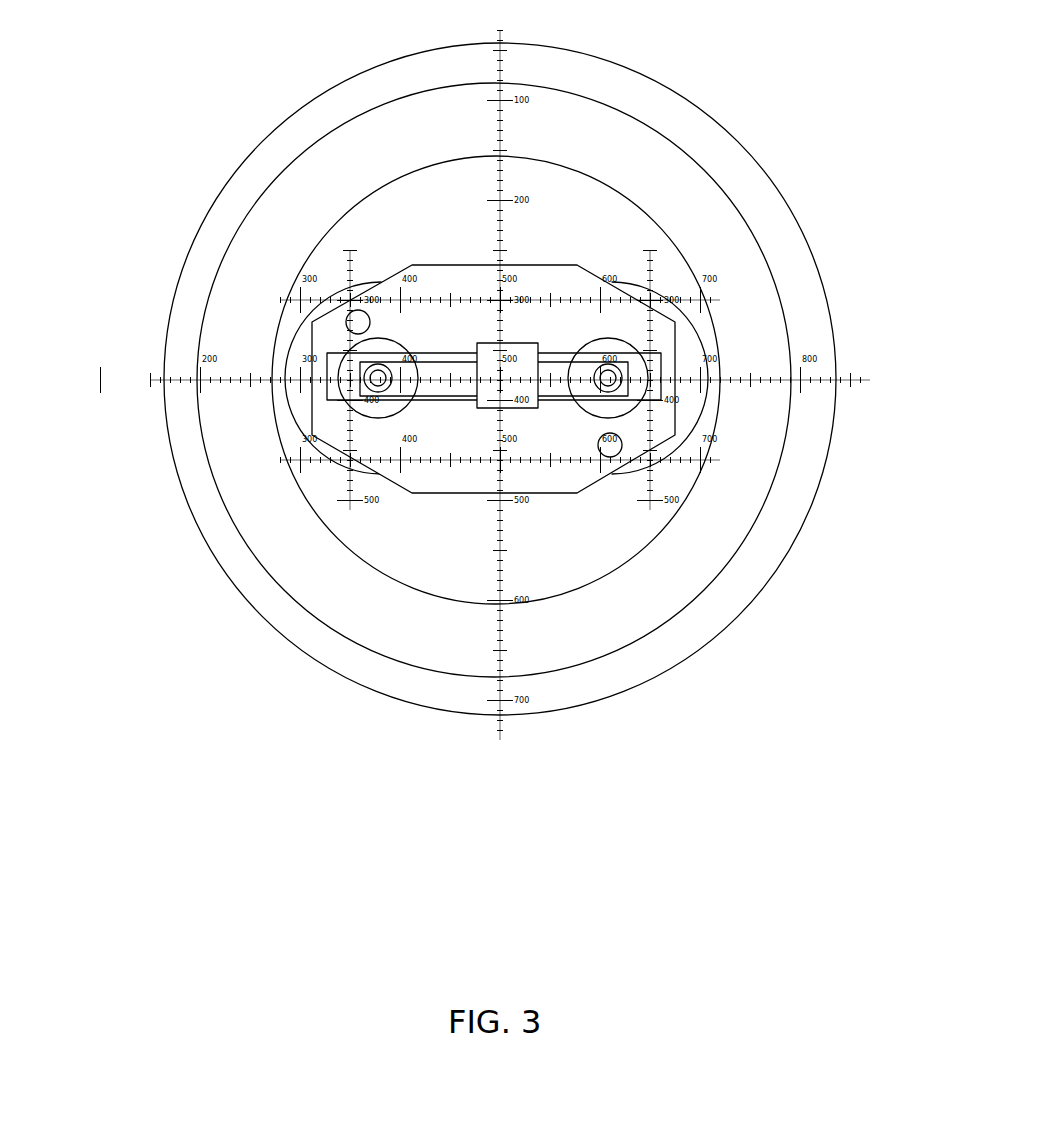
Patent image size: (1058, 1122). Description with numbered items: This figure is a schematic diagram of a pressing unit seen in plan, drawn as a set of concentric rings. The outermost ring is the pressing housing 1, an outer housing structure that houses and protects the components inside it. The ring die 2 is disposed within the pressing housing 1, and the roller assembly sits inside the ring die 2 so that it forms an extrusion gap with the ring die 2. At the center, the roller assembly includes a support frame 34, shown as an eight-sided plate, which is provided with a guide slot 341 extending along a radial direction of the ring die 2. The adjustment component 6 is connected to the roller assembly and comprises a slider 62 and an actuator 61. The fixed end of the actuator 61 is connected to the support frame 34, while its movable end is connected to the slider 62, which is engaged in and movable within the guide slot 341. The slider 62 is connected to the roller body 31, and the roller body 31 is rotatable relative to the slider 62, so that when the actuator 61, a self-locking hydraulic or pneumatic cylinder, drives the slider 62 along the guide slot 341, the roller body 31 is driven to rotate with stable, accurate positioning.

The pressing housing 1 is at (345, 80).
The ring die 2 is at (722, 484).
The roller body 31 is at (345, 288).
The support frame 34 is at (490, 265).
The guide slot 341 is at (662, 377).
The adjustment component 6 is at (505, 452).
The actuator 61 is at (500, 392).
The slider 62 is at (335, 378).